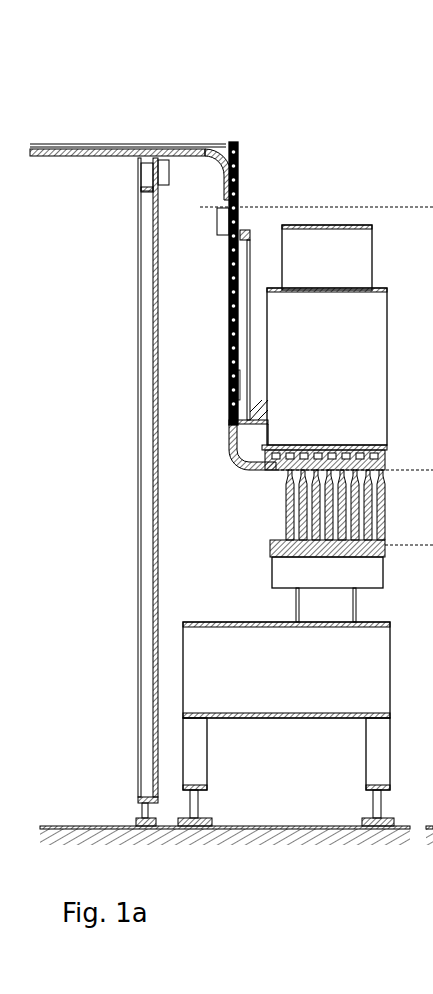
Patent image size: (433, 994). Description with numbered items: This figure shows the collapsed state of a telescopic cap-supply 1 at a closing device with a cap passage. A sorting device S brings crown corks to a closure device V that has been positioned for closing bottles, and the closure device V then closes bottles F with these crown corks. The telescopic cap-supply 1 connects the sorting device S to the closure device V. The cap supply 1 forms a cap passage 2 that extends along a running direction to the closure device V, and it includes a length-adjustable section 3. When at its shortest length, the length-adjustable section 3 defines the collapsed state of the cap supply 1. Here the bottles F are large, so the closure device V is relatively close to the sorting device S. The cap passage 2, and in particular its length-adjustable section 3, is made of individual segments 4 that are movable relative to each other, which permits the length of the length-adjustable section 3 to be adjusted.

The sorting device S is at (128, 145).
The telescopic cap-supply 1 is at (222, 312).
The cap passage 2 is at (244, 207).
The length-adjustable section 3 is at (259, 240).
The segments 4 is at (231, 378).
The closure device V is at (332, 372).
The bottles F is at (264, 516).